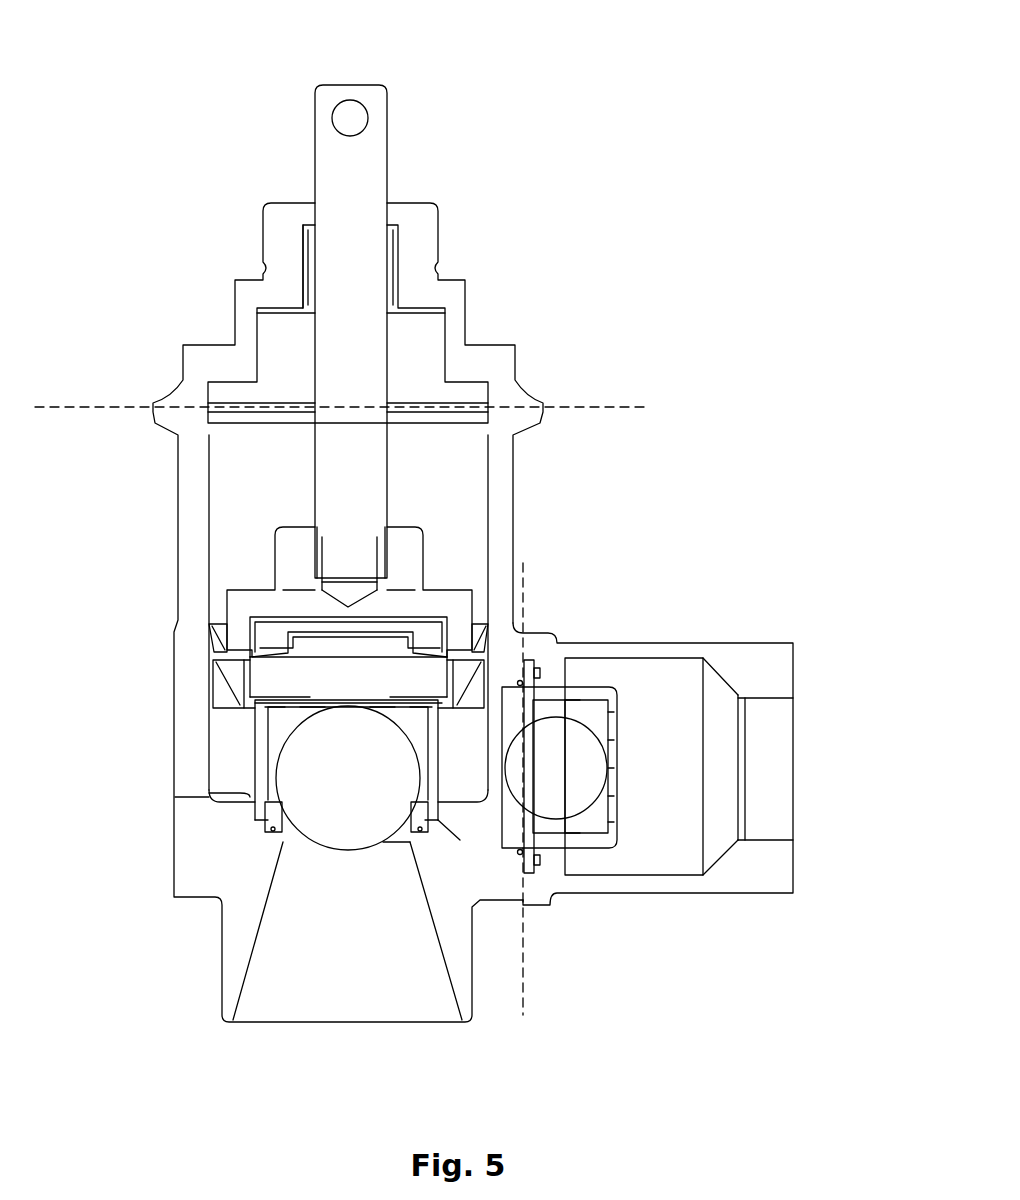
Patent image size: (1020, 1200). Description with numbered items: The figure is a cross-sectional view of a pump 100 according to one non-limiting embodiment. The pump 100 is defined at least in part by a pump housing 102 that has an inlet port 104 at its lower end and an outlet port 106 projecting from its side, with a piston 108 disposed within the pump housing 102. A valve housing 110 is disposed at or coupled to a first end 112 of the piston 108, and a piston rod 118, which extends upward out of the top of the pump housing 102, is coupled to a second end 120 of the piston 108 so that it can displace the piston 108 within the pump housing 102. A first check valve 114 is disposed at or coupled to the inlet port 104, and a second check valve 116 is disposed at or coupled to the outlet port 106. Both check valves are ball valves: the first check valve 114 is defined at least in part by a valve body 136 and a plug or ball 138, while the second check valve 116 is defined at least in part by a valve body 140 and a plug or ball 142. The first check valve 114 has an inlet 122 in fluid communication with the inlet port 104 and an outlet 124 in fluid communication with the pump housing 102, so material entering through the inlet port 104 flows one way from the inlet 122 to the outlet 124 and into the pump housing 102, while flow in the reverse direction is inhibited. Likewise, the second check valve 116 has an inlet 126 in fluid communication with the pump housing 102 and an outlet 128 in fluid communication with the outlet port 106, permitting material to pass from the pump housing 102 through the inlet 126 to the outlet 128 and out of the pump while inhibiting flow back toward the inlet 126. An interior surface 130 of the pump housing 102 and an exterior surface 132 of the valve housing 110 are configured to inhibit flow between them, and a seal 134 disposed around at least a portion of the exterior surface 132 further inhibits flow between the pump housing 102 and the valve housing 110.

The pump 100 is at (196, 91).
The pump housing 102 is at (513, 502).
The inlet port 104 is at (383, 952).
The outlet port 106 is at (762, 648).
The piston 108 is at (412, 573).
The valve housing 110 is at (234, 709).
The first end 112 is at (470, 618).
The first check valve 114 is at (443, 845).
The second check valve 116 is at (635, 818).
The piston rod 118 is at (368, 197).
The second end 120 is at (283, 555).
The inlet 122 is at (398, 842).
The outlet 124 is at (415, 728).
The inlet 126 is at (537, 845).
The outlet 128 is at (593, 718).
The interior surface 130 is at (212, 490).
The exterior surface 132 is at (236, 709).
The seal 134 is at (215, 659).
The valve body 136 is at (260, 743).
The plug (or ball) 138 is at (340, 792).
The valve body 140 is at (590, 697).
The plug (or ball) 142 is at (552, 777).